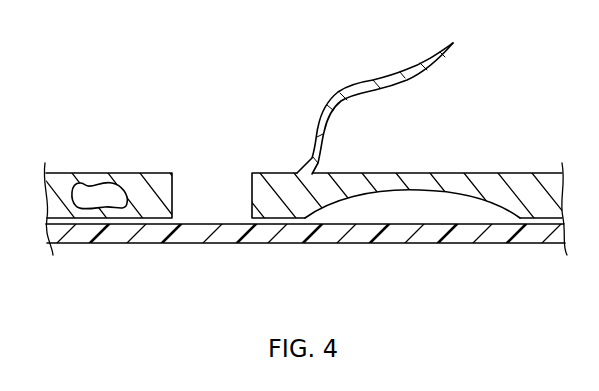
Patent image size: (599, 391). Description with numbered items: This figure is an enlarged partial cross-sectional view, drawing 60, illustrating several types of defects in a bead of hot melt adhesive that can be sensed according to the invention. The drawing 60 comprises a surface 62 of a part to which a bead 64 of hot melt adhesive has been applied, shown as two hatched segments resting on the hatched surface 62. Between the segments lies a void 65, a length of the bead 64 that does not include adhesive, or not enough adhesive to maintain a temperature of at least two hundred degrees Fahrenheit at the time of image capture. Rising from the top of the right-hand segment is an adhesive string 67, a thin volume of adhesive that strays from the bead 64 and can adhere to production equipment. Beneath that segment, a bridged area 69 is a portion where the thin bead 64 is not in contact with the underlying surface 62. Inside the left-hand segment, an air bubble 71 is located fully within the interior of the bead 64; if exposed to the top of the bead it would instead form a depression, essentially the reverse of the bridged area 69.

The drawing 60 is at (98, 92).
The surface 62 is at (188, 235).
The bead 64 is at (155, 183).
The void 65 is at (208, 200).
The adhesive string 67 is at (387, 80).
The bridged area 69 is at (420, 207).
The air bubble 71 is at (98, 197).